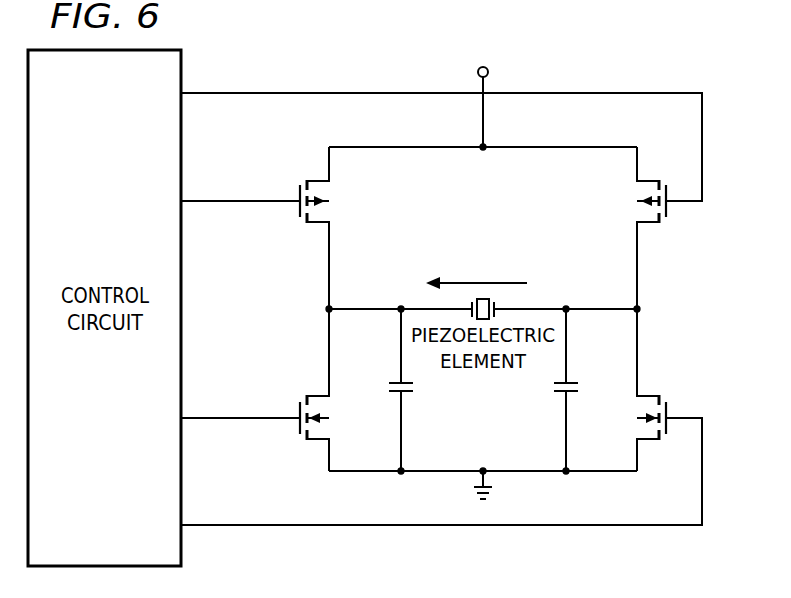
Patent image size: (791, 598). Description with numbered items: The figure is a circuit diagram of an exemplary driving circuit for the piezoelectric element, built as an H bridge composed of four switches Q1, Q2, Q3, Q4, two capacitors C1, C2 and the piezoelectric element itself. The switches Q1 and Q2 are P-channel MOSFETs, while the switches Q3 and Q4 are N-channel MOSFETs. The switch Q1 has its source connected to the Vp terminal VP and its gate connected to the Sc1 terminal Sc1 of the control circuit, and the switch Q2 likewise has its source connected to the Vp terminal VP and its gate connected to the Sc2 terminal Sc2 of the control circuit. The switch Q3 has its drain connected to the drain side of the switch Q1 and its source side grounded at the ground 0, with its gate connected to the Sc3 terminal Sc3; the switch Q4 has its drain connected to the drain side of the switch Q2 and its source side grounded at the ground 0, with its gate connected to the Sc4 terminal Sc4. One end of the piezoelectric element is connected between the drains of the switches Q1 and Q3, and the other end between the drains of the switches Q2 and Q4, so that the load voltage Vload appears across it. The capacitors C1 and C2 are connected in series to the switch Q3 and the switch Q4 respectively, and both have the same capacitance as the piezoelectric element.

The switch Q1 is at (303, 228).
The switch Q2 is at (664, 228).
The switch Q3 is at (303, 390).
The switch Q4 is at (664, 390).
The capacitor C1 is at (386, 390).
The capacitor C2 is at (582, 390).
The Sc1 terminal Sc1 is at (240, 189).
The Sc2 terminal Sc2 is at (441, 135).
The Sc3 terminal Sc3 is at (240, 405).
The Sc4 terminal Sc4 is at (441, 471).
The Vp terminal VP is at (483, 96).
The load voltage Vload is at (476, 272).
The ground 0 is at (491, 489).